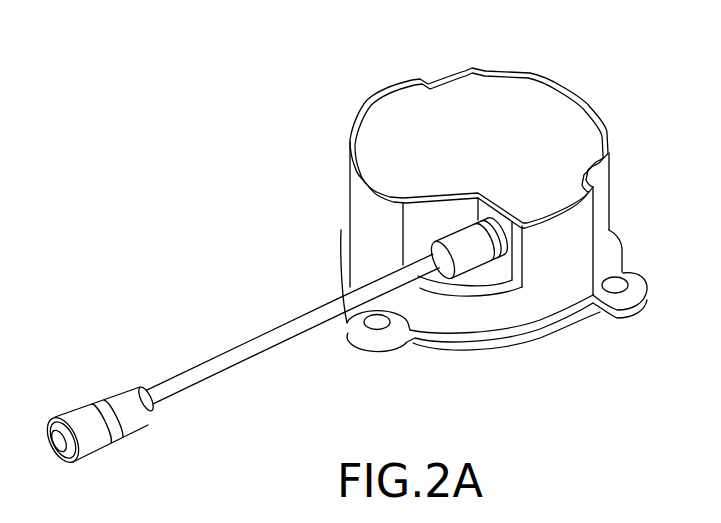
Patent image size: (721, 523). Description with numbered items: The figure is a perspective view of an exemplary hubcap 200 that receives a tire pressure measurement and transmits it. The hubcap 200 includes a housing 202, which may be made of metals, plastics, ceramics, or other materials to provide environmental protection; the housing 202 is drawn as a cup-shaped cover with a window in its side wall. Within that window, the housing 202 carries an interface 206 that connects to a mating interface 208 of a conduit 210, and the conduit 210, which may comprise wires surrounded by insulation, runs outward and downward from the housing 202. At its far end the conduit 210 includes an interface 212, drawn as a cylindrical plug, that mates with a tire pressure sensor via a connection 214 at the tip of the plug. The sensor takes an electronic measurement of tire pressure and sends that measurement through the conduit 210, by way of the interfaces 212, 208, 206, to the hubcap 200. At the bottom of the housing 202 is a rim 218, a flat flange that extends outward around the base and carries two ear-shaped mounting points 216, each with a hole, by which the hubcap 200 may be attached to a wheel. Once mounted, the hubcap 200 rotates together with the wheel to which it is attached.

The hubcap 200 is at (236, 105).
The housing 202 is at (528, 92).
The interface 206 is at (510, 245).
The interface 208 is at (445, 268).
The conduit 210 is at (252, 352).
The interface 212 is at (124, 391).
The connection 214 is at (58, 414).
The mounting points 216 is at (628, 272).
The rim 218 is at (487, 340).